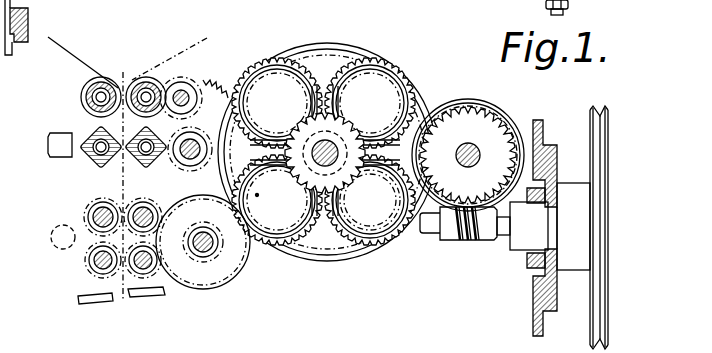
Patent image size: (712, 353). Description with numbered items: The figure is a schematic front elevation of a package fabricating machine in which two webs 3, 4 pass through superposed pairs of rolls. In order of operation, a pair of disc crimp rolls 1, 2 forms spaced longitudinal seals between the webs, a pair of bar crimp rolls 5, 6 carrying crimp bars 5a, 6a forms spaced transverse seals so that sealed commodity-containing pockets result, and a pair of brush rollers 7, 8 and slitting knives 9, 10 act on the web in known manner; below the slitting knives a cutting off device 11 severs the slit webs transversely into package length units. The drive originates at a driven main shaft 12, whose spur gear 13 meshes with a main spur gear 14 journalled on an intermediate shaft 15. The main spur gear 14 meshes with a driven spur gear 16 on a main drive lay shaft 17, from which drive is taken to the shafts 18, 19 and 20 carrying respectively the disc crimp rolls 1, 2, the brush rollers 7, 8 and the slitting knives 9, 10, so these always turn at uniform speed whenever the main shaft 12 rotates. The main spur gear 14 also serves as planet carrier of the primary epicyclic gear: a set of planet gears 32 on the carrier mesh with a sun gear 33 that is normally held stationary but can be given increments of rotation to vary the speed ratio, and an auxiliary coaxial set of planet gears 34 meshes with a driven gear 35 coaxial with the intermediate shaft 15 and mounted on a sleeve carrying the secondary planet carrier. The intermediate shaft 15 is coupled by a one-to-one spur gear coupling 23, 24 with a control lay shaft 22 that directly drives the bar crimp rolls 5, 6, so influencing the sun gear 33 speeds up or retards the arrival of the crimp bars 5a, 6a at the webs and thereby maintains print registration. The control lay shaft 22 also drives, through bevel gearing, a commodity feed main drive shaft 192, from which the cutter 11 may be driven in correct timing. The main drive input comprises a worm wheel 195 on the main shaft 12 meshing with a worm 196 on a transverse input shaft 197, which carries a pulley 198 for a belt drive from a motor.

The disc crimp roll 1 is at (83, 85).
The disc crimp roll 2 is at (155, 77).
The web 3 is at (48, 37).
The web 4 is at (213, 34).
The bar crimp roll 5 is at (87, 157).
The crimp bar 5a is at (100, 137).
The bar crimp roll 6 is at (173, 160).
The crimp bar 6a is at (130, 160).
The brush roller 7 is at (90, 216).
The brush roller 8 is at (152, 212).
The slitting knife 9 is at (89, 256).
The slitting knife 10 is at (123, 293).
The cutting off device 11 is at (88, 299).
The main shaft 12 is at (472, 164).
The spur gear 13 is at (453, 113).
The main spur gear 14 is at (333, 55).
The intermediate shaft 15 is at (338, 138).
The driven spur gear 16 is at (233, 270).
The main drive lay shaft 17 is at (206, 251).
The shaft 18 is at (148, 88).
The shaft 19 is at (140, 216).
The shaft 20 is at (100, 263).
The control lay shaft 22 is at (203, 150).
The spur gear 23 is at (215, 82).
The spur gear 24 is at (265, 203).
The planet gear 32 is at (262, 83).
The sun gear 33 is at (370, 200).
The auxiliary planet gear 34 is at (262, 62).
The driven gear 35 is at (325, 151).
The commodity feed main drive shaft 192 is at (50, 137).
The worm wheel 195 is at (507, 113).
The worm 196 is at (473, 242).
The input shaft 197 is at (500, 232).
The pulley 198 is at (592, 133).